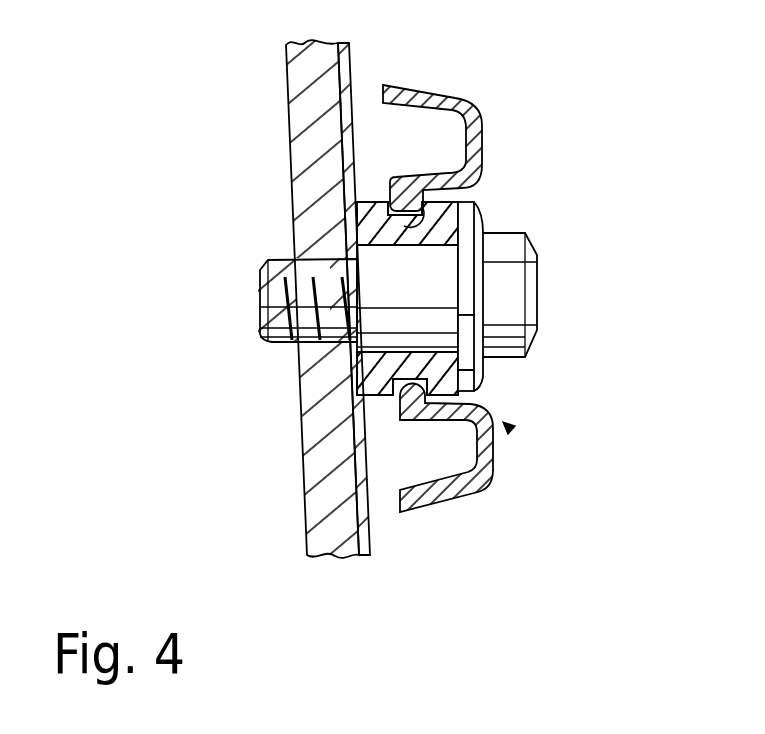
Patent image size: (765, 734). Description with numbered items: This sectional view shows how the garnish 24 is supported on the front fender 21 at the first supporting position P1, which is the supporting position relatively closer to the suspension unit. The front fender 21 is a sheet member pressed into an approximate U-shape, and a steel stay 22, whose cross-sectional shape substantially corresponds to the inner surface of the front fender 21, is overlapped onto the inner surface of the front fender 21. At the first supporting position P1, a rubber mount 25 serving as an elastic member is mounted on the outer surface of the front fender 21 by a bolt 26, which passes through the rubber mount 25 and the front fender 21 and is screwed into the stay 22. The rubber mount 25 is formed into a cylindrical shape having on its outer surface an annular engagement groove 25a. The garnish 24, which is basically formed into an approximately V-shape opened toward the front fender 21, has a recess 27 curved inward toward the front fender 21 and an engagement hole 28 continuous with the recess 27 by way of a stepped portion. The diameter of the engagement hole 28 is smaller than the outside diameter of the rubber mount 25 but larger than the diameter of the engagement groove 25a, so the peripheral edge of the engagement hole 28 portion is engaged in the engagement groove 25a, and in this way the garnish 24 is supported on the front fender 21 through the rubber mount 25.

The front fender 21 is at (350, 66).
The stay 22 is at (297, 120).
The garnish 24 is at (475, 140).
The rubber mount 25 is at (365, 367).
The engagement groove 25a is at (414, 412).
The bolt 26 is at (525, 289).
The recess 27 is at (478, 391).
The engagement hole 28 is at (476, 206).
The first supporting position P1 is at (506, 426).